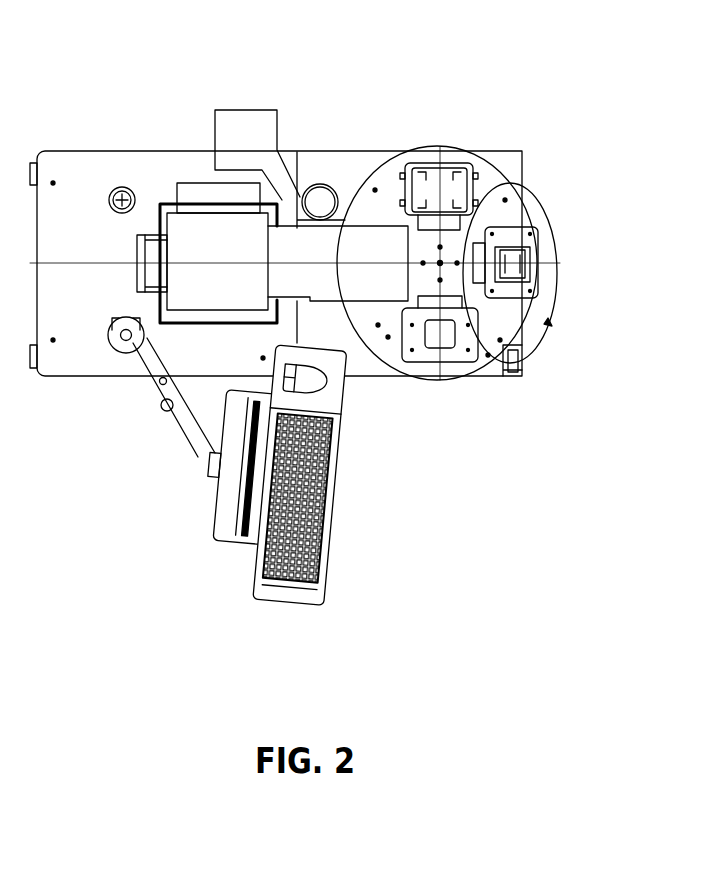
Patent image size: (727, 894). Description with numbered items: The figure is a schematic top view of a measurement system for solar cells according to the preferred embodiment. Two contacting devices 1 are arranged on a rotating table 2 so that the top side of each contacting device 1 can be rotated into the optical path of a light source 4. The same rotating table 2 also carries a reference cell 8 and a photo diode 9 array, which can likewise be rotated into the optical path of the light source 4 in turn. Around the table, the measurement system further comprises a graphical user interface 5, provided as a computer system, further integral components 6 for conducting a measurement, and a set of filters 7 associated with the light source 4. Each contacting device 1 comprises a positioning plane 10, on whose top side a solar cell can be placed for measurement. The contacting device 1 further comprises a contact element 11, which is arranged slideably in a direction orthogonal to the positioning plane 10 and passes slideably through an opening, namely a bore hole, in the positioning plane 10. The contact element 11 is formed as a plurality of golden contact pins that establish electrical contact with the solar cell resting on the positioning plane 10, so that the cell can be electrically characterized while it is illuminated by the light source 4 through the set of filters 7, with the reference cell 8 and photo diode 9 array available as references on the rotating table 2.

The contacting device 1 is at (537, 195).
The rotating table 2 is at (448, 119).
The light source 4 is at (363, 232).
The graphical user interface 5 is at (253, 436).
The integral components 6 is at (124, 164).
The set of filters 7 is at (237, 131).
The reference cell 8 is at (448, 176).
The photo diode 9 is at (511, 233).
The positioning plane 10 is at (519, 275).
The contact element 11 is at (548, 322).